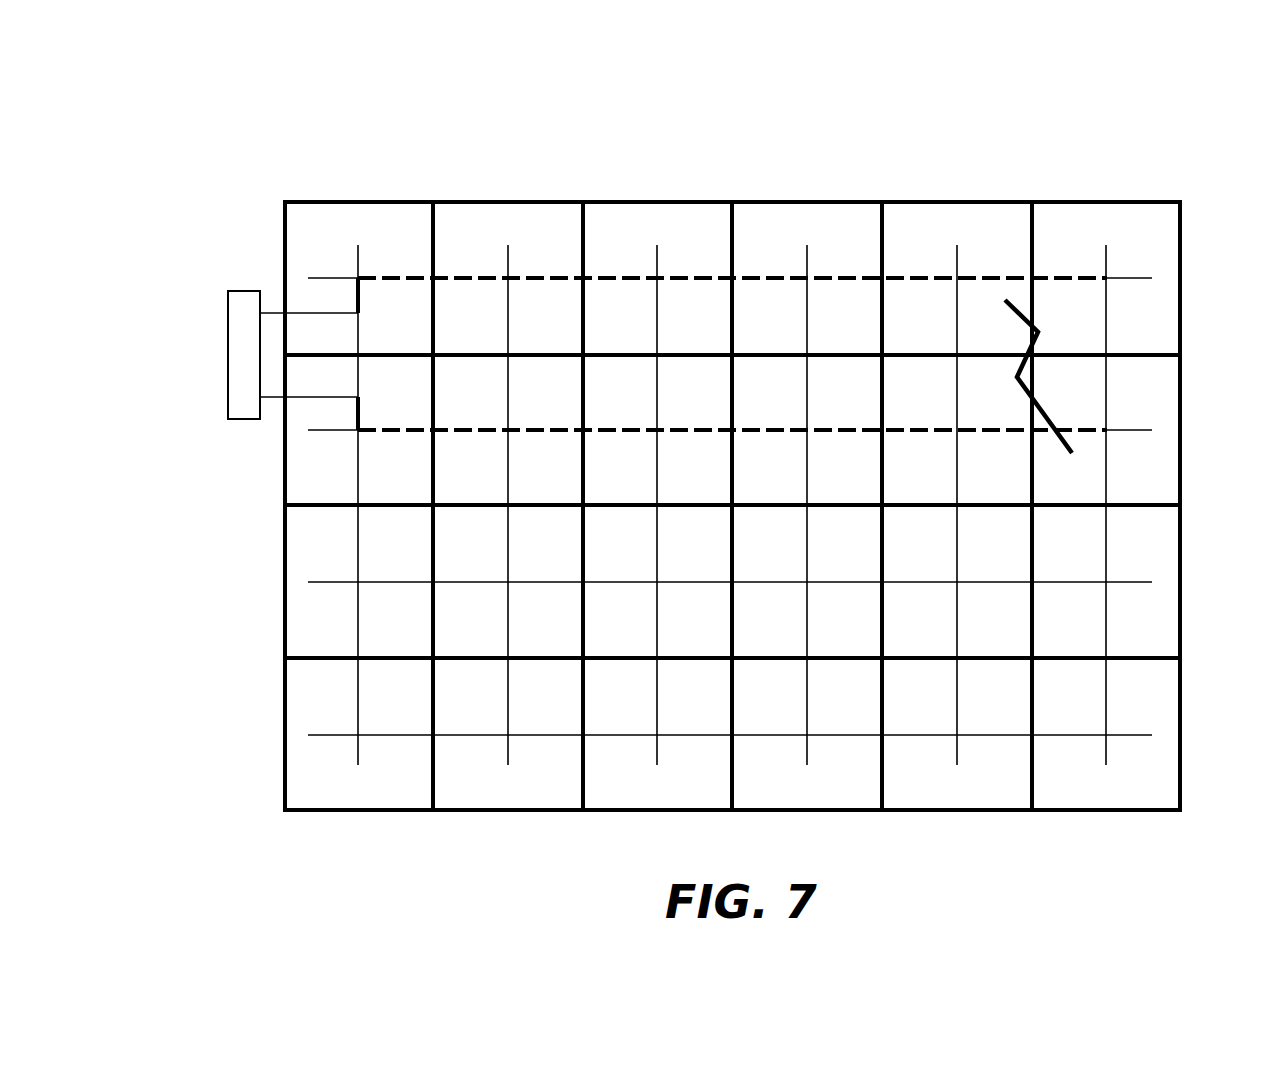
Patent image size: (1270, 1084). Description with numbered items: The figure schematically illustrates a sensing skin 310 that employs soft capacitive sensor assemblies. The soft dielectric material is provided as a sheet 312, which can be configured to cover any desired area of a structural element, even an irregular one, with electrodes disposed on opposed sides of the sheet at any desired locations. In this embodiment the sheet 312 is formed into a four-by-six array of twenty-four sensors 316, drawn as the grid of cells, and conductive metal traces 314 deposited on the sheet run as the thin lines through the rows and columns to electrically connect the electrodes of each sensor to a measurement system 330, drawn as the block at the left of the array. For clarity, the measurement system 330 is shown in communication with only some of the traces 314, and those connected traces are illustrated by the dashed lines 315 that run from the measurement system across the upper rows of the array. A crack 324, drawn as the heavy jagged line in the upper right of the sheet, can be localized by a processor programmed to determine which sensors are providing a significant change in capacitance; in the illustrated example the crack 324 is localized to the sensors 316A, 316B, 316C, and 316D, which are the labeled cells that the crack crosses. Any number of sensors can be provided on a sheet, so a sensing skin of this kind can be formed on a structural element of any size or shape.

The sensing skin 310 is at (876, 132).
The sheet 312 is at (1147, 545).
The conductive metal traces 314 is at (510, 322).
The dashed lines 315 is at (843, 428).
The sensors 316 is at (460, 700).
The sensor 316A is at (1017, 239).
The sensor 316B is at (1170, 239).
The sensor 316C is at (947, 496).
The sensor 316D is at (1097, 496).
The crack 324 is at (1038, 332).
The measurement system 330 is at (245, 338).